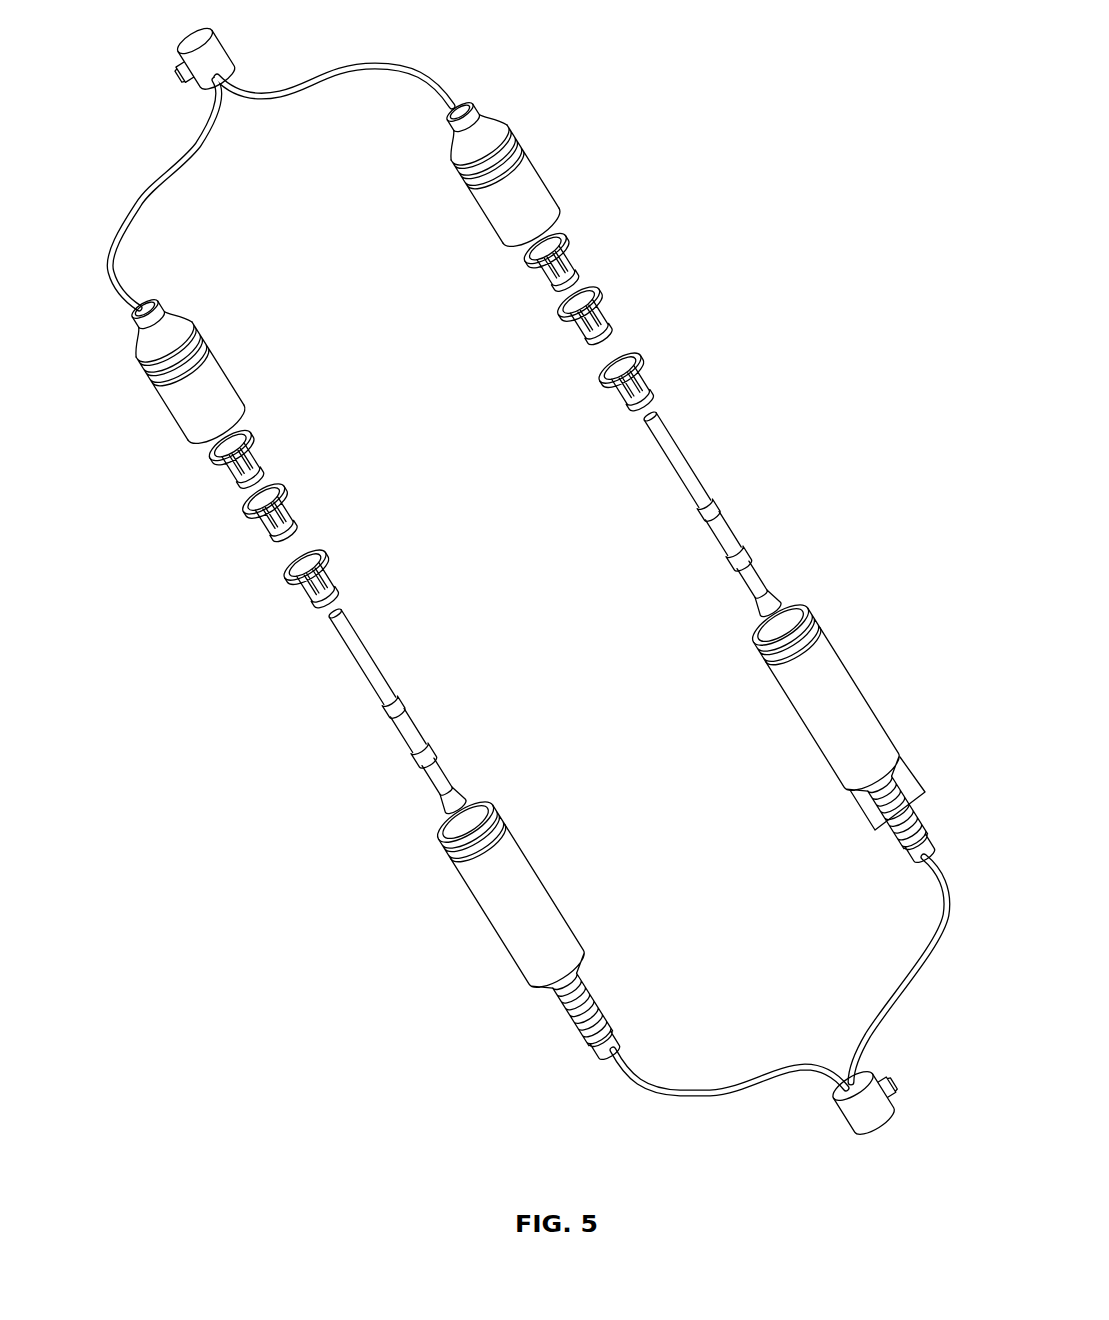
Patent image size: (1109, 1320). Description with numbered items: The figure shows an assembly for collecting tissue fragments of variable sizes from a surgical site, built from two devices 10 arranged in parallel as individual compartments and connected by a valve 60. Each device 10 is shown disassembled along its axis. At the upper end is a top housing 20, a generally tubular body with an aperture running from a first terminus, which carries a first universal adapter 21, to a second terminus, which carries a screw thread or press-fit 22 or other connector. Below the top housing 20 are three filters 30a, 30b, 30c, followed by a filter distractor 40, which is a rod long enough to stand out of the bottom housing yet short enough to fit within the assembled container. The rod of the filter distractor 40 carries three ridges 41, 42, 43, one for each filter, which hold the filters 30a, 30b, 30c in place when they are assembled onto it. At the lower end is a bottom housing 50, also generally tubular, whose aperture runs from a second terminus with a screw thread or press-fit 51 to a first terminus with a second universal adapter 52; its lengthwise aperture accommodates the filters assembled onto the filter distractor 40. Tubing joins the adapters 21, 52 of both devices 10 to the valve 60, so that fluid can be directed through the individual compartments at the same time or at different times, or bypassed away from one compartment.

The device 10 is at (525, 576).
The top housing 20 is at (497, 208).
The first universal adapter 21 is at (448, 130).
The press-fit 22 is at (556, 215).
The filter 30a is at (577, 260).
The filter 30b is at (605, 320).
The filter 30c is at (650, 382).
The filter distractor 40 is at (678, 467).
The ridge 41 is at (702, 510).
The ridge 42 is at (737, 557).
The ridge 43 is at (765, 605).
The bottom housing 50 is at (810, 710).
The press-fit 51 is at (810, 620).
The second universal adapter 52 is at (908, 807).
The valve 60 is at (218, 47).